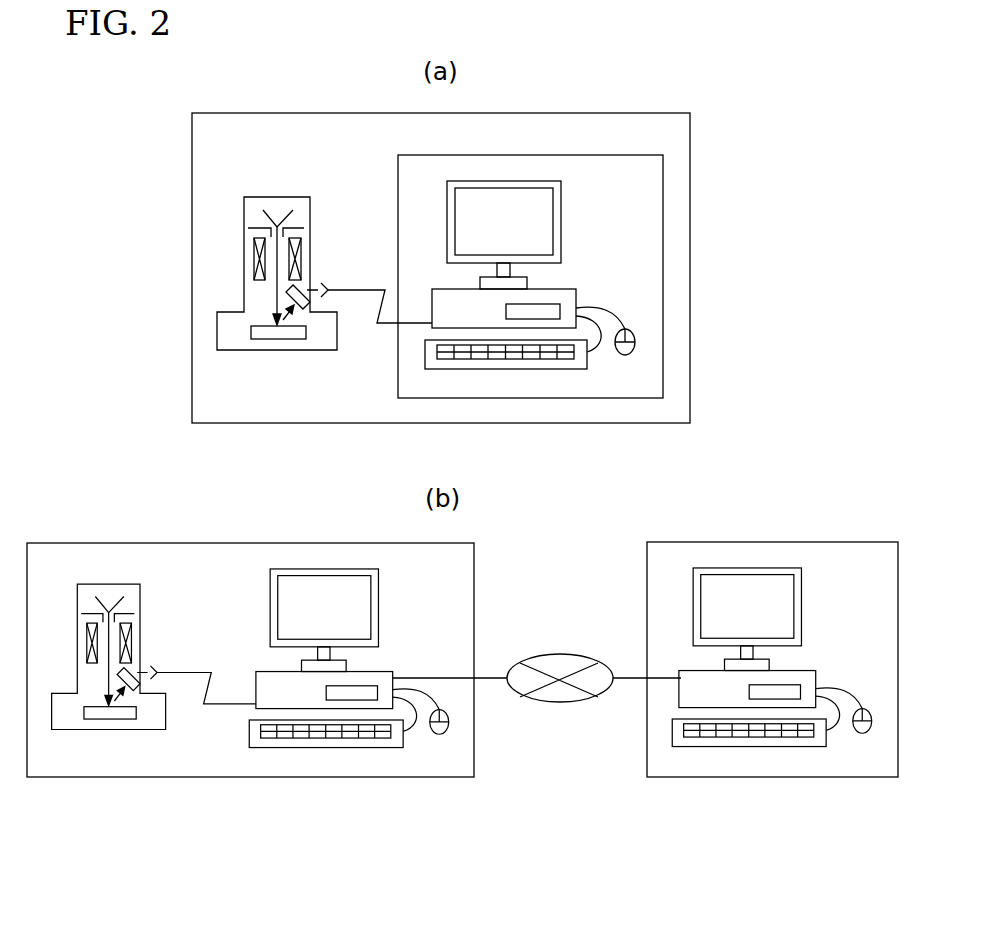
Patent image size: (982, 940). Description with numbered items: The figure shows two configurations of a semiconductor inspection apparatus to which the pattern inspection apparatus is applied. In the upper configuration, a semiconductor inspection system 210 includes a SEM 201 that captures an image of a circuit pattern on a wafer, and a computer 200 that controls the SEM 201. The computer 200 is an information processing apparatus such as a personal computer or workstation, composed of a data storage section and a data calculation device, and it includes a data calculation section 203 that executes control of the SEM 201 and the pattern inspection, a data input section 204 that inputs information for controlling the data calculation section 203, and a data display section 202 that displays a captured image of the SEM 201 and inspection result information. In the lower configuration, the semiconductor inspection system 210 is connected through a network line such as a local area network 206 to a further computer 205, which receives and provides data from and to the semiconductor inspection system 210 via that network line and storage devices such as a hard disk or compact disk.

The computer 200 is at (573, 155).
The SEM (Scanning Electron Microscope) 201 is at (277, 197).
The data display section 202 is at (561, 213).
The data calculation section 203 is at (570, 289).
The data input section 204 is at (625, 329).
The computer 205 is at (647, 745).
The local area network 206 is at (583, 655).
The semiconductor inspection system 210 is at (690, 204).